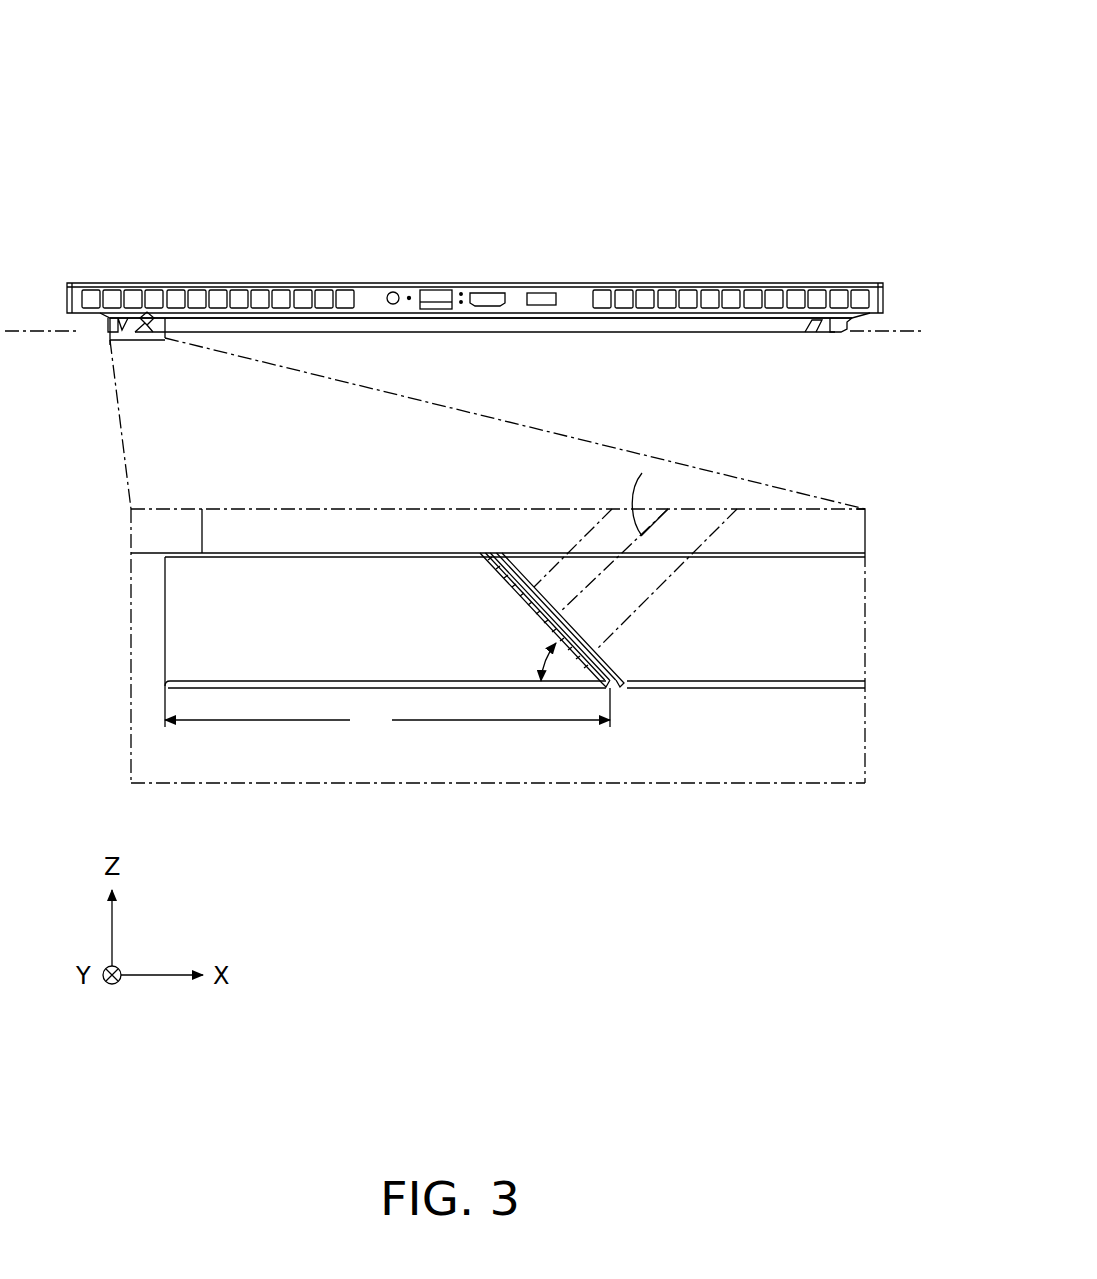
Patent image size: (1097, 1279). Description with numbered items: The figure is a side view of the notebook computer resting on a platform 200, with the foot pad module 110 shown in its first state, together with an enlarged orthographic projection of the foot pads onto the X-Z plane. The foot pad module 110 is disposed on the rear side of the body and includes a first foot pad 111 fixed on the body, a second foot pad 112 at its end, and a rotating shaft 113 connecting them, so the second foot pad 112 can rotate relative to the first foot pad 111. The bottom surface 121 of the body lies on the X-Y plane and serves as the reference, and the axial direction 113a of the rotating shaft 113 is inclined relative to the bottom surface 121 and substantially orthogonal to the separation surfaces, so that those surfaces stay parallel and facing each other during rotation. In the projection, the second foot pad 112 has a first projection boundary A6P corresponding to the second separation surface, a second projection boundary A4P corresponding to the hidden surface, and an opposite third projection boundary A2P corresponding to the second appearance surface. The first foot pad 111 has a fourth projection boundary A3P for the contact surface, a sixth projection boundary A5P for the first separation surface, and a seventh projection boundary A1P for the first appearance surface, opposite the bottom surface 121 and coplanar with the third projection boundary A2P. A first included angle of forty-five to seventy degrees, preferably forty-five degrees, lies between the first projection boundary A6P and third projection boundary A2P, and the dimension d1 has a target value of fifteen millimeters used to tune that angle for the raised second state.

The platform 200 is at (53, 329).
The foot pad module 110 is at (743, 13).
The first foot pad 111 is at (862, 838).
The second foot pad 112 is at (80, 421).
The rotating shaft 113 is at (718, 815).
The axial direction 113a is at (650, 465).
The bottom surface 121 is at (147, 558).
The seventh projection boundary A1P is at (792, 690).
The third projection boundary A2P is at (257, 690).
The fourth projection boundary A3P is at (164, 620).
The second projection boundary A4P is at (378, 552).
The sixth projection boundary A5P is at (521, 587).
The first projection boundary A6P is at (602, 661).
The dimension d1 is at (387, 713).